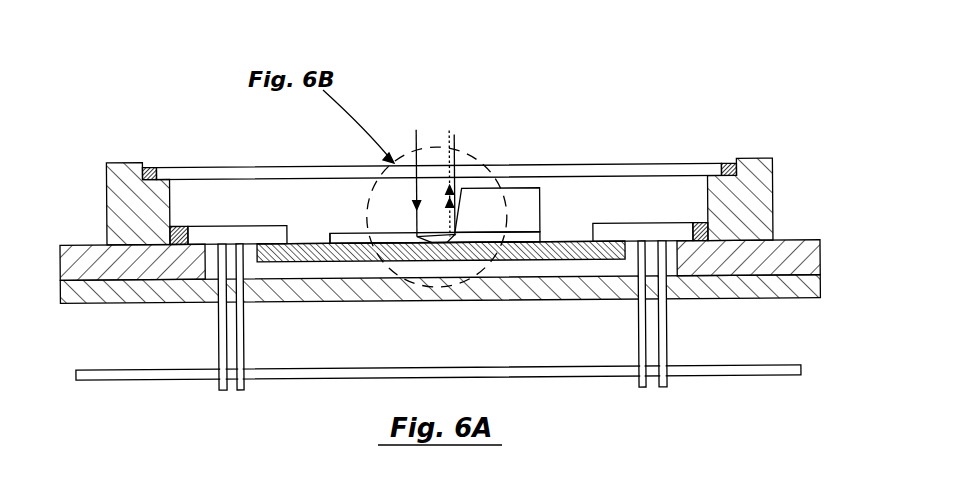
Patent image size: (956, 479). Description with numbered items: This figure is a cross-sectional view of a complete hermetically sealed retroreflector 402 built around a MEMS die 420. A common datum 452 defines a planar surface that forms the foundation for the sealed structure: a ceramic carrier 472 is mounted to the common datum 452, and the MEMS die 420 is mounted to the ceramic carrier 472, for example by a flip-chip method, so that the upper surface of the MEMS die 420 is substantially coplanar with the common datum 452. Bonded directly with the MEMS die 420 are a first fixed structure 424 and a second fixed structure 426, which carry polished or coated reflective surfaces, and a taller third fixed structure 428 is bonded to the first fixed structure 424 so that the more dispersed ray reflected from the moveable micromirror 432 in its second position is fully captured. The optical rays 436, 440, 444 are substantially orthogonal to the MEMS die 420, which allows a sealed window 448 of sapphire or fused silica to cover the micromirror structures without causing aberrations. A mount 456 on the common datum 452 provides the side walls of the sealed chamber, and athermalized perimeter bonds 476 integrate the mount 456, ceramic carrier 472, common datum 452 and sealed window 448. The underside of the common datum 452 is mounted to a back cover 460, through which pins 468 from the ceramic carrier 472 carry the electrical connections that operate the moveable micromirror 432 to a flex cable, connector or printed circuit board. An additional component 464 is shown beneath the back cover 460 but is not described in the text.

The hermetically sealed retroreflector 402 is at (598, 97).
The MEMS die 420 is at (562, 240).
The first fixed structure 424 is at (540, 240).
The second fixed structure 426 is at (347, 233).
The third fixed structure 428 is at (522, 193).
The moveable micromirror 432 is at (462, 262).
The incoming optical ray 436 is at (417, 132).
The optical ray 440 is at (447, 133).
The optical ray 444 is at (457, 137).
The sealed window 448 is at (615, 165).
The common datum 452 is at (83, 245).
The mount 456 is at (118, 163).
The back cover 460 is at (132, 300).
The lift bar 464 is at (142, 382).
The pins 468 is at (220, 390).
The ceramic carrier 472 is at (250, 227).
The athermalized perimeter bonds 476 is at (150, 167).